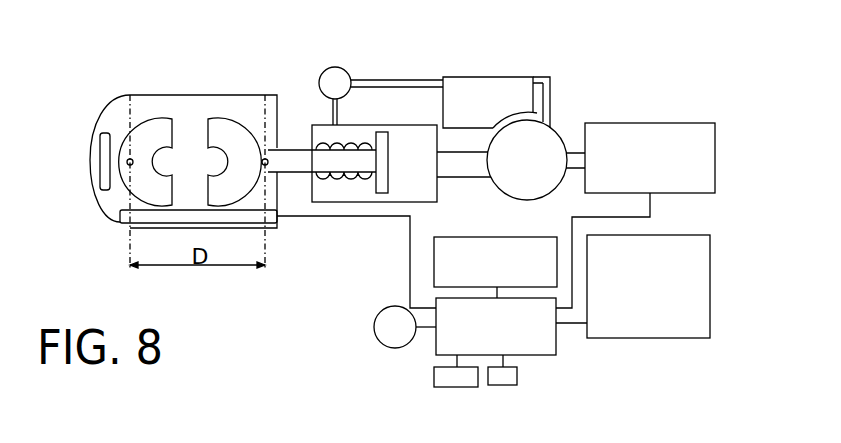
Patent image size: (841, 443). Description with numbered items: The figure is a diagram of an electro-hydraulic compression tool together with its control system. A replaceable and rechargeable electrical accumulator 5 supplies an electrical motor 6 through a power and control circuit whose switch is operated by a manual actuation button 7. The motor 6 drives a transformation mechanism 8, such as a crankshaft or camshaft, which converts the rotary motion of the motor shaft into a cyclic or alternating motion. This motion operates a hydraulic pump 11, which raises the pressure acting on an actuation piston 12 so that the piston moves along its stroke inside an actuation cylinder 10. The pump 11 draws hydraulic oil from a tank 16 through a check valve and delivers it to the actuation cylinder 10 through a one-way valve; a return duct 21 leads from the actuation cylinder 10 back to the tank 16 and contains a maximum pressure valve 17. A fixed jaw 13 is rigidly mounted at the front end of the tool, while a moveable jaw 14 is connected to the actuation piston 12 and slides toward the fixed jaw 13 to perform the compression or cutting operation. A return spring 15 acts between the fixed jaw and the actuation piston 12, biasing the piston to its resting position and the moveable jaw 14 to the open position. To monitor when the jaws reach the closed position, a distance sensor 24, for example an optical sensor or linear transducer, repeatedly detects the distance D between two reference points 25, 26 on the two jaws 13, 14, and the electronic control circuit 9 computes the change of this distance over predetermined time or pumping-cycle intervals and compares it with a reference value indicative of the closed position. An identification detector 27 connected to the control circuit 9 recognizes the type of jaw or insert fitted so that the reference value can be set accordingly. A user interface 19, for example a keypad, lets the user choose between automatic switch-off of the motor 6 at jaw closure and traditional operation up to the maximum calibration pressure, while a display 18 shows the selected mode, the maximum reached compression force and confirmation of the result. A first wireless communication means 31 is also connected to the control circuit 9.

The electrical accumulator 5 is at (693, 333).
The electrical motor 6 is at (698, 128).
The manual actuation button 7 is at (394, 341).
The transformation mechanism 8 is at (566, 151).
The electronic control circuit 9 is at (525, 347).
The actuation cylinder 10 is at (385, 104).
The hydraulic pump 11 is at (547, 137).
The actuation piston 12 is at (290, 162).
The fixed jaw 13 is at (154, 134).
The moveable jaw 14 is at (232, 134).
The return spring 15 is at (369, 134).
The tank 16 is at (475, 92).
The maximum pressure valve 17 is at (336, 67).
The display 18 is at (545, 282).
The user interface 19 is at (466, 381).
The return duct 21 is at (329, 118).
The distance sensor 24 is at (253, 218).
The reference point 25 is at (130, 157).
The reference point 26 is at (264, 157).
The identification detector 27 is at (102, 163).
The first wireless communication means 31 is at (509, 381).